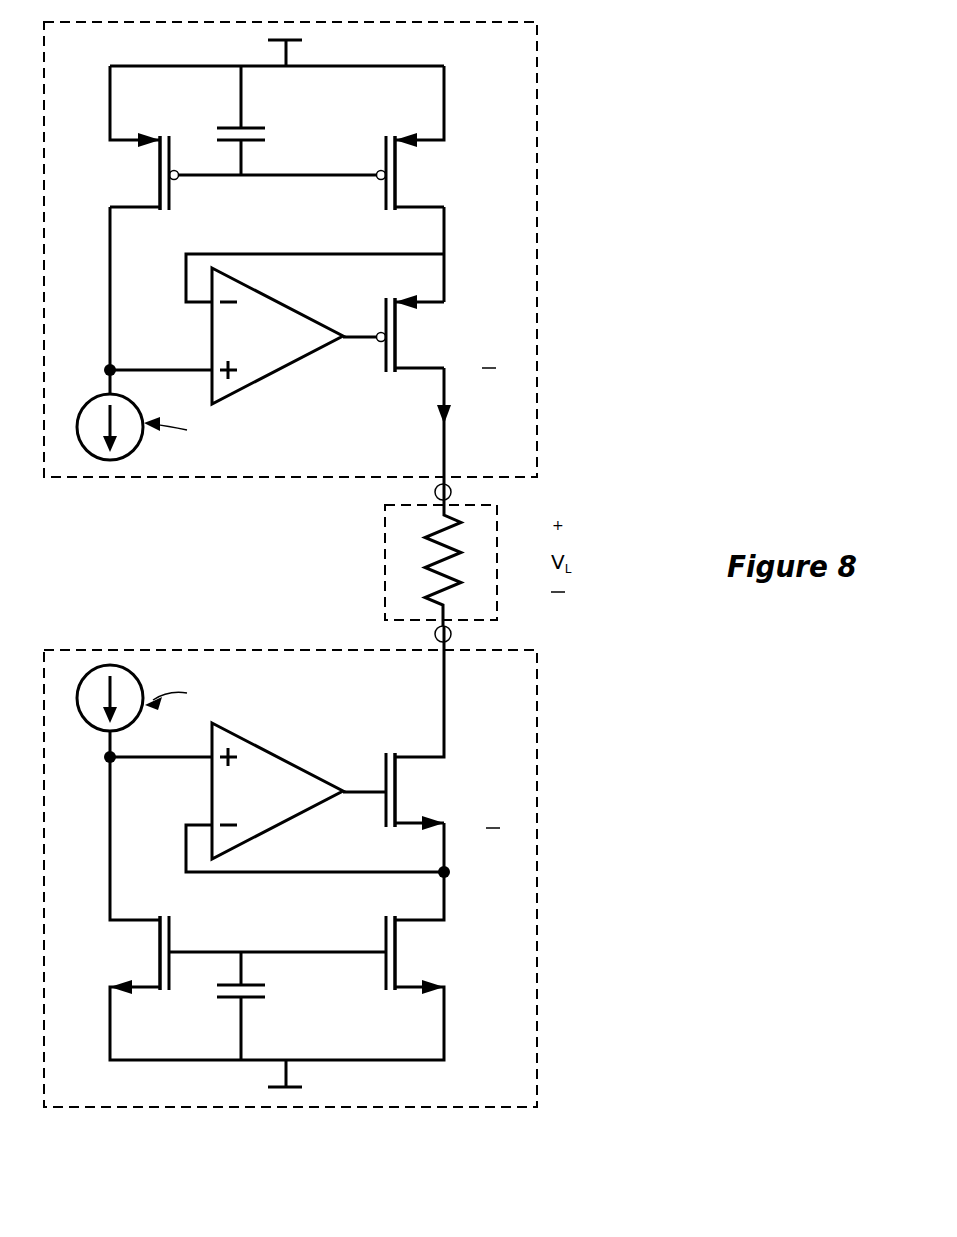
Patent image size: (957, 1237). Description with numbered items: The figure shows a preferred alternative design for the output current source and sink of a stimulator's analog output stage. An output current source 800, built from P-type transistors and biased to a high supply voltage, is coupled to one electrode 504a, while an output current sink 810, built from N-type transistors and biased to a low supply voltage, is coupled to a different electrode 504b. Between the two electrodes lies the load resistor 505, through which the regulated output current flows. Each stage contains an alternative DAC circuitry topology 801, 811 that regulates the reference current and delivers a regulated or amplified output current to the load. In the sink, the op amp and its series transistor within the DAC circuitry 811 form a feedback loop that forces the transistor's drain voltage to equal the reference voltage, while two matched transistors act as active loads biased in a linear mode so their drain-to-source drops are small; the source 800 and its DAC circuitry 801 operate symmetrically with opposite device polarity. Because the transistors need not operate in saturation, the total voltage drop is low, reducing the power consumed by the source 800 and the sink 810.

The output current source 800 is at (334, 253).
The DAC circuitry topology 801 is at (290, 386).
The electrode 504a is at (452, 494).
The load resistor R 505 is at (374, 570).
The electrode 504b is at (452, 637).
The output current sink 810 is at (335, 878).
The DAC circuitry topology 811 is at (291, 740).